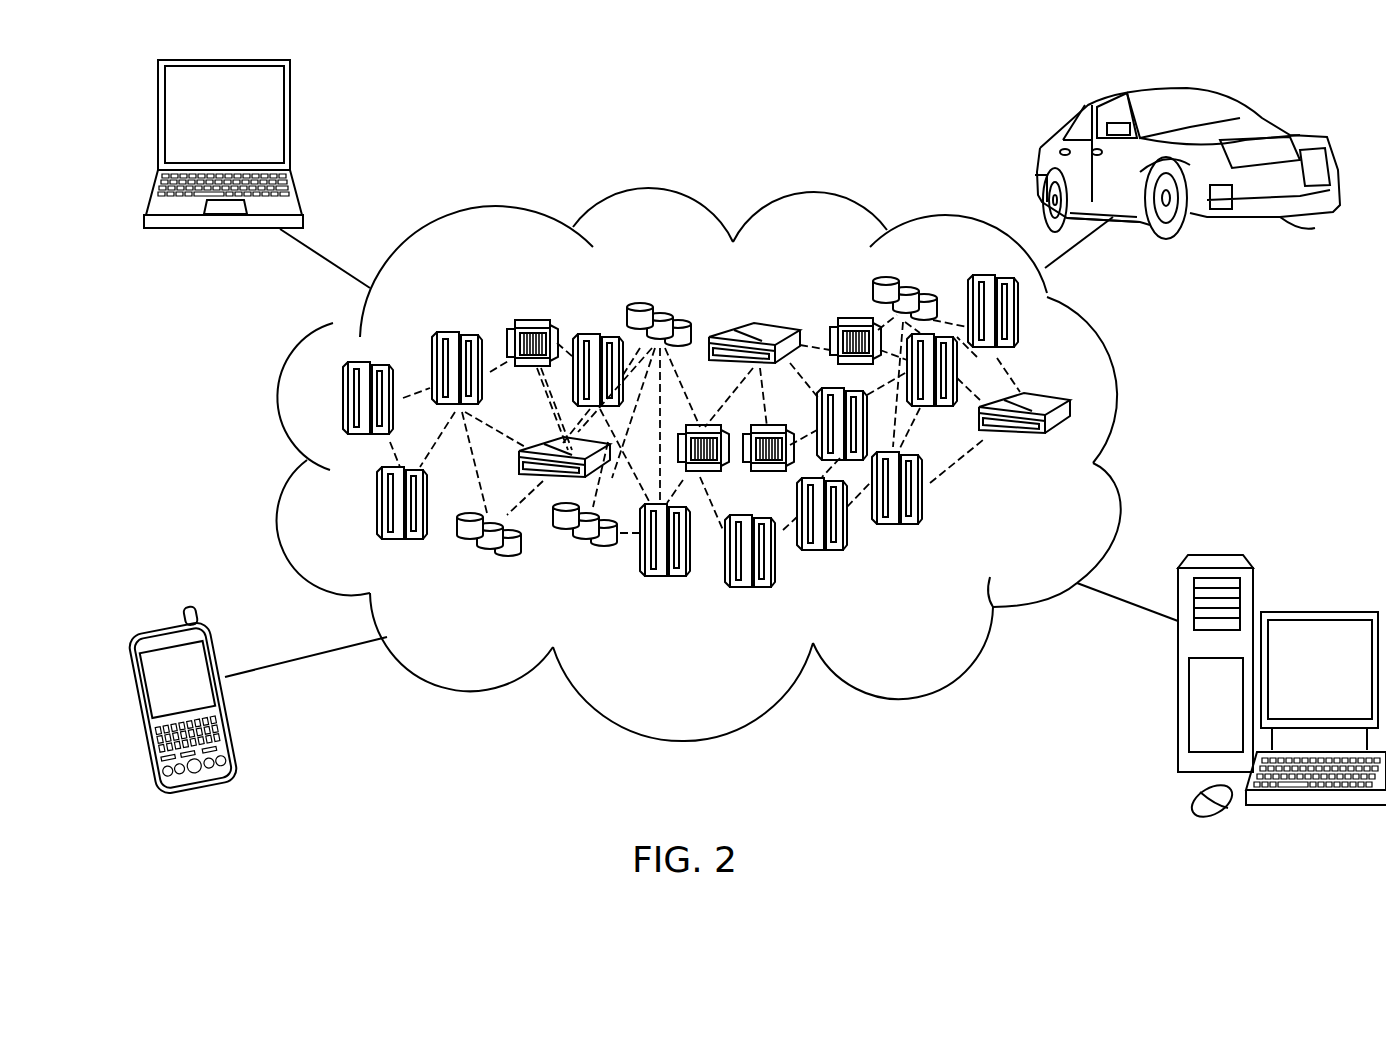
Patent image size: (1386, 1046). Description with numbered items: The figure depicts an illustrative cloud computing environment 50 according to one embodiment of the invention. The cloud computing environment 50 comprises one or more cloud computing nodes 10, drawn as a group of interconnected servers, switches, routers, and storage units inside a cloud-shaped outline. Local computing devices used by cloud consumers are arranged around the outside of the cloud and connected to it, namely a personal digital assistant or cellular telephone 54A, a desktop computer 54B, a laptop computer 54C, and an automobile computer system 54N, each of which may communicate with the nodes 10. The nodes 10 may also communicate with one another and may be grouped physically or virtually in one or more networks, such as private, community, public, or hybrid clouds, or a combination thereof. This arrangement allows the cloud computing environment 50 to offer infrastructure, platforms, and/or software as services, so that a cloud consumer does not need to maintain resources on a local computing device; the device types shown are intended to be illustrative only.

The cloud computing node 10 is at (1100, 465).
The cloud computing environment 50 is at (1115, 372).
The personal digital assistant or cellular telephone 54A is at (132, 708).
The desktop computer 54B is at (1312, 611).
The laptop computer 54C is at (158, 120).
The automobile computer system 54N is at (1240, 113).